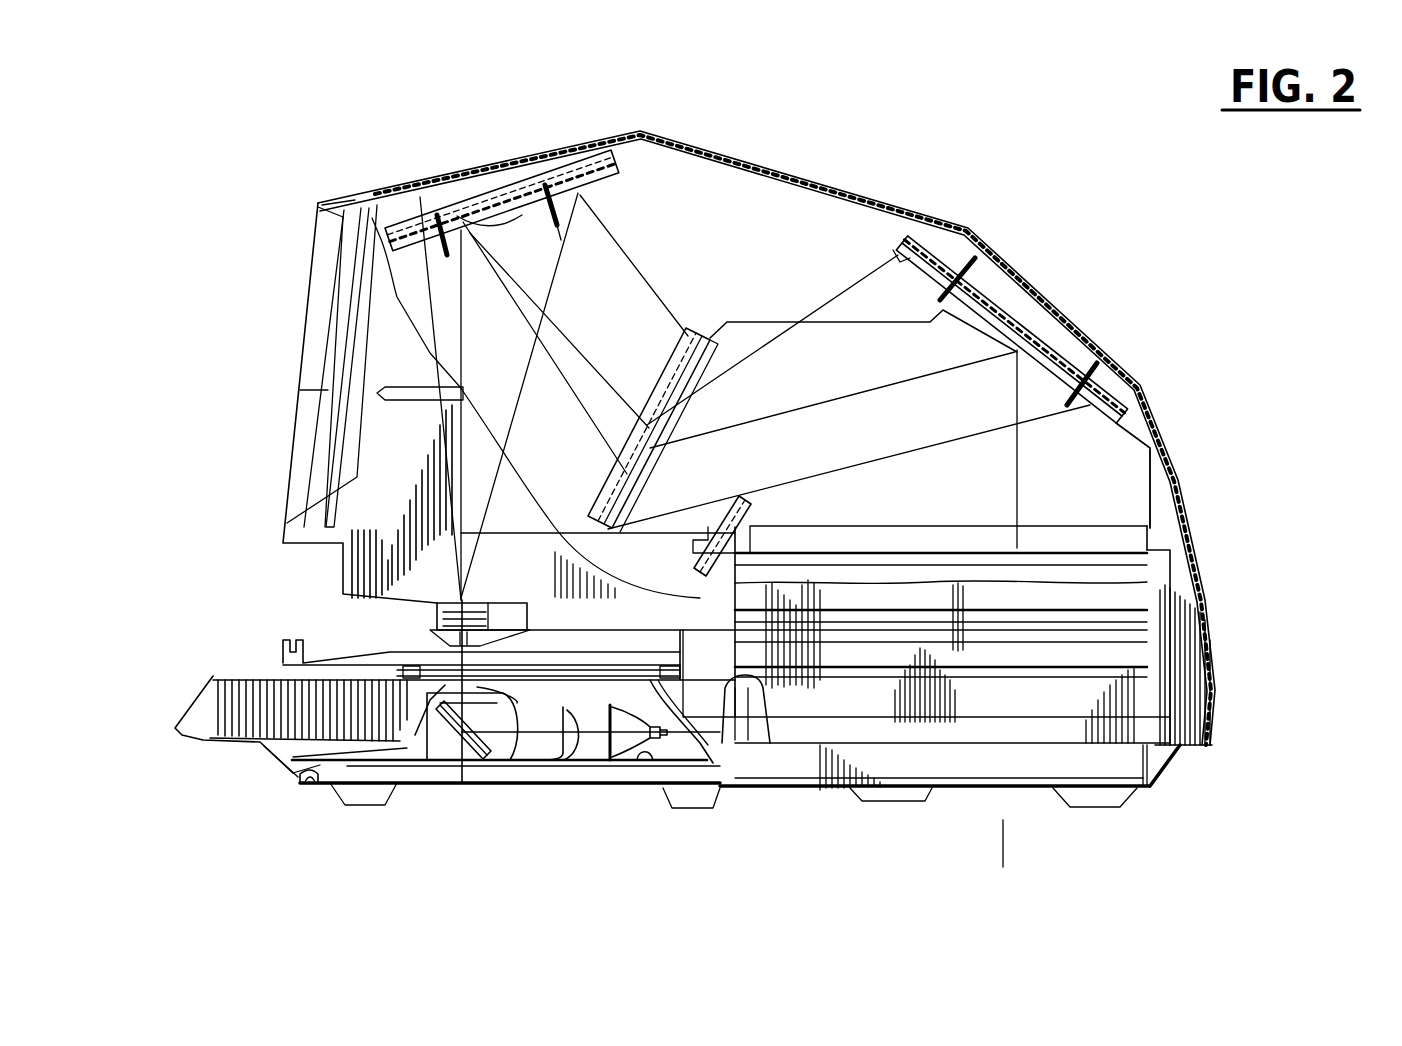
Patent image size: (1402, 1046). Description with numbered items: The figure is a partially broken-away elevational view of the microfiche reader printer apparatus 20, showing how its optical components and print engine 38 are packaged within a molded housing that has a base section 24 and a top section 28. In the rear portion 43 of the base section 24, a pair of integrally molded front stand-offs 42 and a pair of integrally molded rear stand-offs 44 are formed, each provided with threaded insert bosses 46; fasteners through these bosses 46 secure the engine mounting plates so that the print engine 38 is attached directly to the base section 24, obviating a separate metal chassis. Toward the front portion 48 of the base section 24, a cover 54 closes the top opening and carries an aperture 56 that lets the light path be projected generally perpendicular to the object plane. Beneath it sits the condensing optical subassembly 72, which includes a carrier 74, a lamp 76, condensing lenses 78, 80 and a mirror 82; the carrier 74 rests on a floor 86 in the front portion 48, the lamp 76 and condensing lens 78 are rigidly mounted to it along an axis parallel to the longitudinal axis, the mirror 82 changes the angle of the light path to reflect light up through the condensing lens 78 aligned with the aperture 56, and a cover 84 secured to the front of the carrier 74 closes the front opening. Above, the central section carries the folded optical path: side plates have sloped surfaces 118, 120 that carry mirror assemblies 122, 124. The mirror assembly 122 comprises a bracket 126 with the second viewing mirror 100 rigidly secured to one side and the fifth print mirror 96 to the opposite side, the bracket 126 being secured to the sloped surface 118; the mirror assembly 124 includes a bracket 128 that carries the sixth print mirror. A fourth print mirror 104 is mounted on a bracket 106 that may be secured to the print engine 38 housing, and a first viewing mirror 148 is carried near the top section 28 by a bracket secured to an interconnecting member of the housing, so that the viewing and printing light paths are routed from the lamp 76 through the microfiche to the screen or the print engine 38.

The reader printer apparatus 20 is at (1172, 310).
The base section 24 is at (1210, 660).
The top section 28 is at (1067, 317).
The print engine 38 is at (1142, 660).
The front stand-offs 42 is at (743, 690).
The rear portion 43 is at (1003, 835).
The rear stand-offs 44 is at (1157, 747).
The threaded insert bosses 46 is at (1210, 713).
The front portion 48 is at (155, 803).
The cover 54 is at (252, 675).
The aperture 56 is at (430, 688).
The condensing optical subassembly 72 is at (540, 760).
The carrier 74 is at (653, 760).
The lamp 76 is at (610, 763).
The condensing lens 78 is at (537, 758).
The condensing lens 80 is at (569, 758).
The mirror 82 is at (455, 738).
The cover 84 is at (175, 712).
The floor 86 is at (308, 777).
The fifth print mirror 96 is at (703, 400).
The second viewing mirror 100 is at (633, 420).
The fourth print mirror 104 is at (728, 487).
The bracket 106 is at (772, 530).
The sloped surface 118 is at (700, 385).
The sloped surface 120 is at (1000, 333).
The mirror assembly 122 is at (648, 339).
The mirror assembly 124 is at (1020, 283).
The bracket 126 is at (715, 337).
The bracket 128 is at (1157, 433).
The first viewing mirror 148 is at (520, 182).